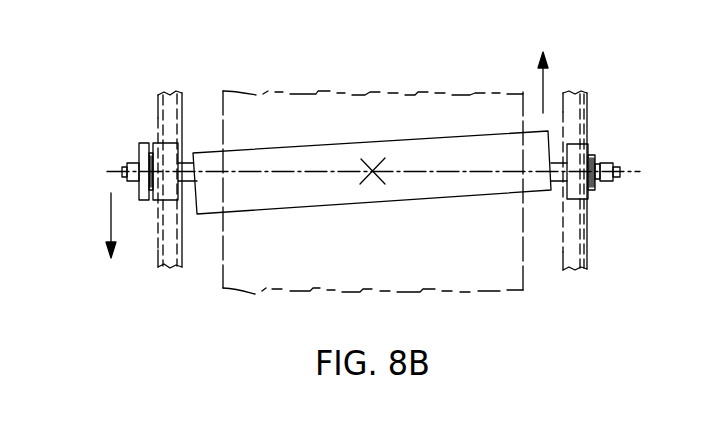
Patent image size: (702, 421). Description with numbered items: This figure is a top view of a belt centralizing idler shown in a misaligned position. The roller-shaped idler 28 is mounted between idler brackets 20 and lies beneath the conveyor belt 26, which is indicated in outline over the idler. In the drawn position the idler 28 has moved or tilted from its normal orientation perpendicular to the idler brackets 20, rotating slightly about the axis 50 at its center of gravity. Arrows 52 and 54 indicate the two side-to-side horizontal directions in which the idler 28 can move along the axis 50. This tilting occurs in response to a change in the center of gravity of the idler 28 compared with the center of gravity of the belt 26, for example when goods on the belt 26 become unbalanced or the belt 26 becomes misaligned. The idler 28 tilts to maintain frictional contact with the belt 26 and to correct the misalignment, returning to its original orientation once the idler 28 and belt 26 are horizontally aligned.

The idler bracket 20 is at (575, 113).
The conveyor belt 26 is at (473, 293).
The idler 28 is at (300, 208).
The axis 50 is at (373, 176).
The arrow 52 is at (543, 79).
The arrow 54 is at (111, 222).